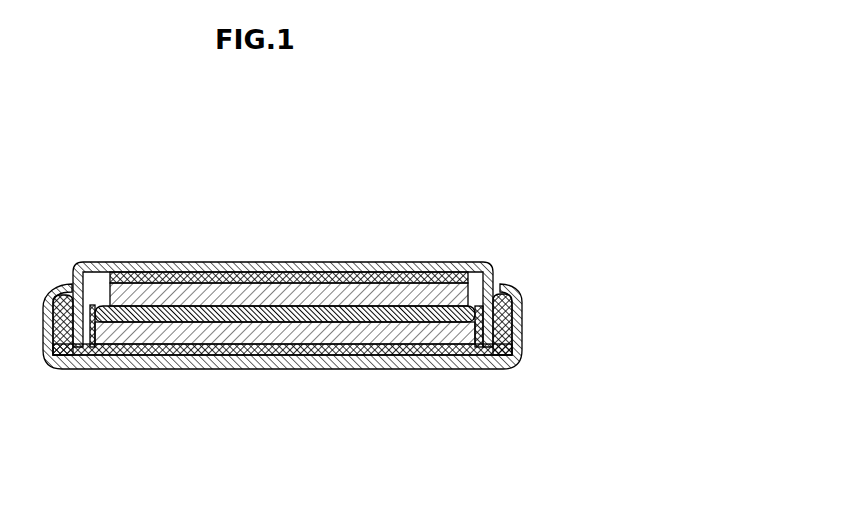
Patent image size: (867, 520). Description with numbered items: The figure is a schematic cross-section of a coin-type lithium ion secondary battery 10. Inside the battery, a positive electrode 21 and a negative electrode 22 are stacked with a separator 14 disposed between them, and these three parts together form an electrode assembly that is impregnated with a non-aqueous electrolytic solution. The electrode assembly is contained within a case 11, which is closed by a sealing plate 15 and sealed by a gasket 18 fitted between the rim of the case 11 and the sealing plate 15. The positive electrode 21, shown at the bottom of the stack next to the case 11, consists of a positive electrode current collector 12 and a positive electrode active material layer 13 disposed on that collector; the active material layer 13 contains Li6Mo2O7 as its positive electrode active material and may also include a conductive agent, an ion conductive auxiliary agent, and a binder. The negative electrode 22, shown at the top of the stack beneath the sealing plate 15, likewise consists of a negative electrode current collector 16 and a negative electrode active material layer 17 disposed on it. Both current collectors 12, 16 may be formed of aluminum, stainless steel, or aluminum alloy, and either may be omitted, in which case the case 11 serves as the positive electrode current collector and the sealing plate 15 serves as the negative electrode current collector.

The coin-type battery 10 is at (413, 128).
The case 11 is at (143, 363).
The positive electrode current collector 12 is at (398, 445).
The positive electrode active material layer 13 is at (397, 337).
The separator 14 is at (428, 316).
The sealing plate 15 is at (110, 262).
The negative electrode current collector 16 is at (185, 200).
The negative electrode active material layer 17 is at (203, 277).
The gasket 18 is at (500, 353).
The positive electrode 21 is at (282, 405).
The negative electrode 22 is at (289, 234).